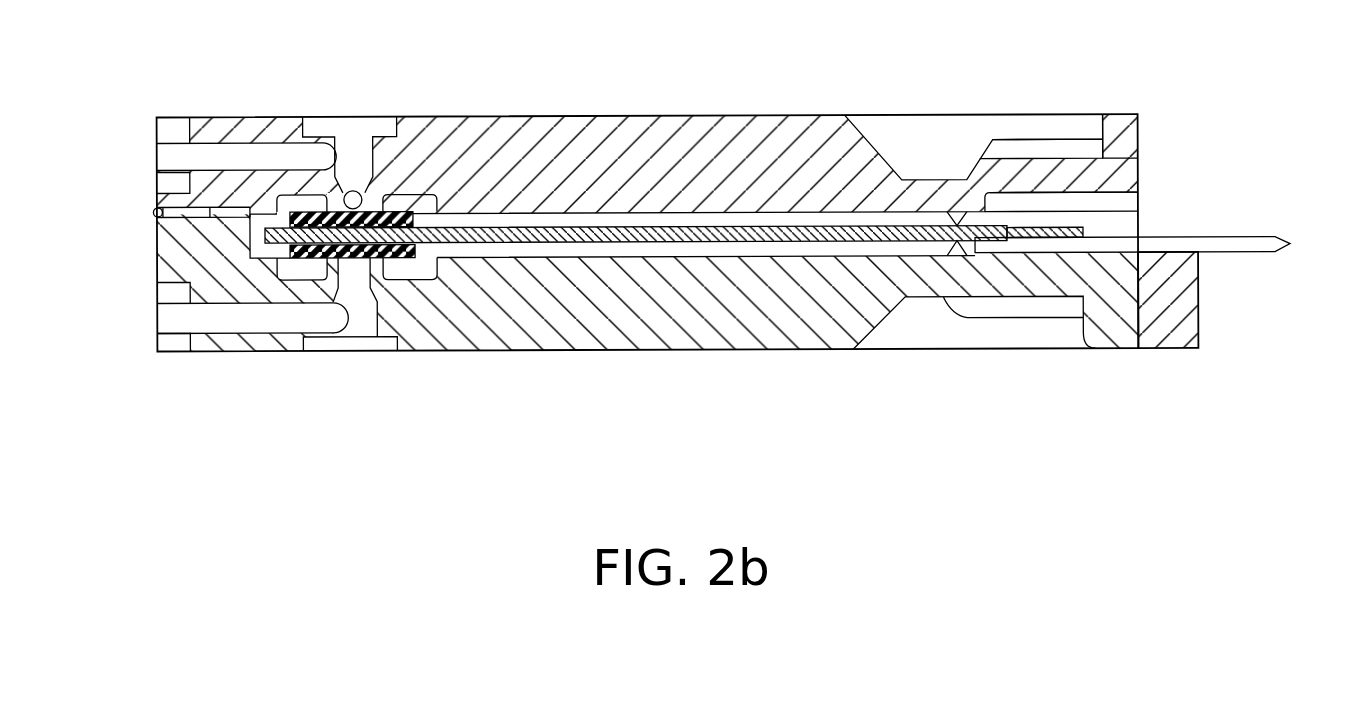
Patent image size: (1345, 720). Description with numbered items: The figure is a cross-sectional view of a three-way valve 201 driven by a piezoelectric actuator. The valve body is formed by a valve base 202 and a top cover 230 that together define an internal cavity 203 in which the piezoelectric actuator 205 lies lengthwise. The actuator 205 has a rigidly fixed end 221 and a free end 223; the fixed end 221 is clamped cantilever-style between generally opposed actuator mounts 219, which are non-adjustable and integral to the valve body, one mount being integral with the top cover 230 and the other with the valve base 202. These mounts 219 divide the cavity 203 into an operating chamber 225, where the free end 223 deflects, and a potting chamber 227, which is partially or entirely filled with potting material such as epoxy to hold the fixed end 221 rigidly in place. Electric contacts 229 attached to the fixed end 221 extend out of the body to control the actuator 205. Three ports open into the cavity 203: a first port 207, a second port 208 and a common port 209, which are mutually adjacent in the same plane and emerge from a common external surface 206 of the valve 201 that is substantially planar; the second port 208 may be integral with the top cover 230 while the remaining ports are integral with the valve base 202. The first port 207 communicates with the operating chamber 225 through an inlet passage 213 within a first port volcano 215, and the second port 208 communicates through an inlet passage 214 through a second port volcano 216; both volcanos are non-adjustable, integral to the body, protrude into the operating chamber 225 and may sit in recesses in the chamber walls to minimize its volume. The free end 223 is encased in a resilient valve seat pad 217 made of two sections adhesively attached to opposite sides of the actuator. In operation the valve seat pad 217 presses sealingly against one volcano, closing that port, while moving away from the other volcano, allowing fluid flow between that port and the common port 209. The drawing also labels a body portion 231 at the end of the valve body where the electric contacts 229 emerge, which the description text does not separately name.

The valve 201 is at (604, 47).
The valve base 202 is at (790, 333).
The cavity 203 is at (657, 213).
The piezoelectric actuator 205 is at (742, 229).
The common external surface 206 is at (160, 262).
The first port 207 is at (173, 322).
The second port 208 is at (175, 163).
The common port 209 is at (152, 210).
The inlet passage 213 is at (353, 272).
The inlet passage 214 is at (355, 192).
The first port volcano 215 is at (387, 284).
The second port volcano 216 is at (310, 180).
The valve seat pad 217 is at (266, 205).
The actuator mounts 219 is at (962, 214).
The fixed end 221 is at (993, 213).
The free end 223 is at (437, 198).
The operating chamber 225 is at (267, 248).
The potting chamber 227 is at (1117, 224).
The electric contacts 229 is at (1225, 240).
The top cover 230 is at (1127, 140).
The lower end block 231 is at (1182, 352).